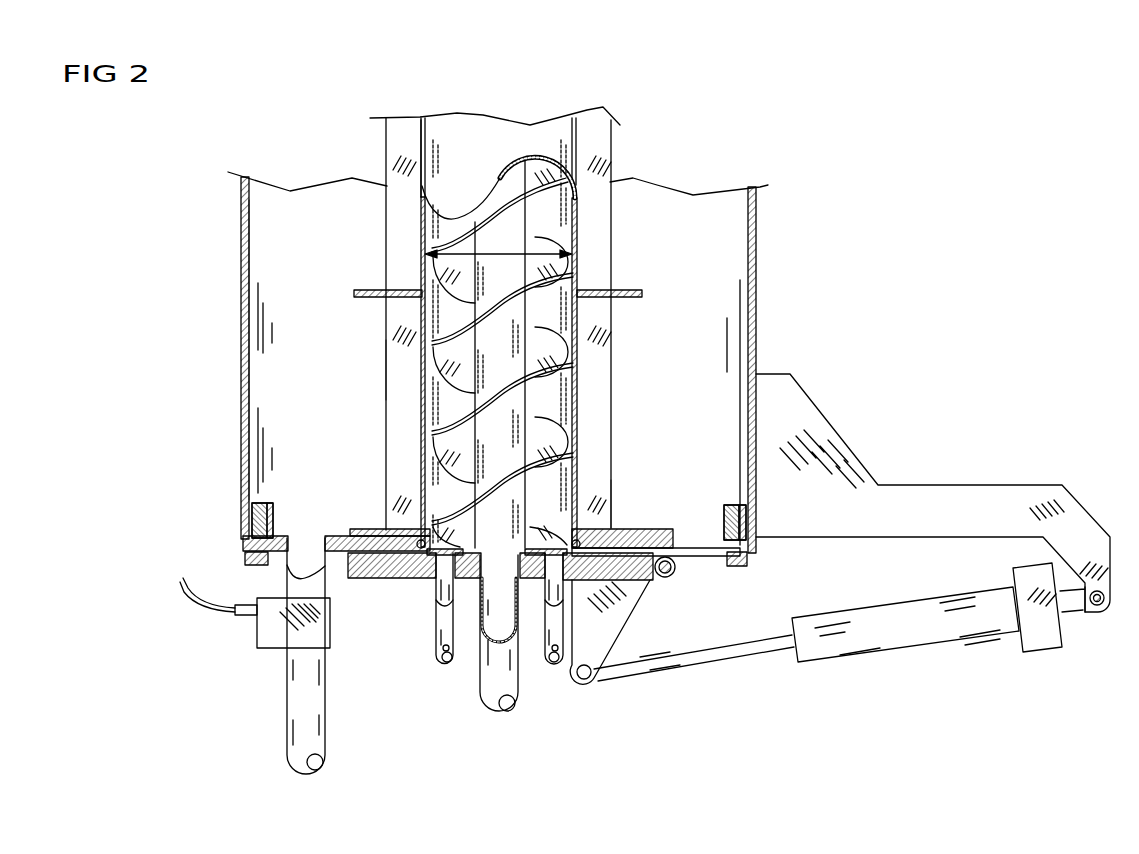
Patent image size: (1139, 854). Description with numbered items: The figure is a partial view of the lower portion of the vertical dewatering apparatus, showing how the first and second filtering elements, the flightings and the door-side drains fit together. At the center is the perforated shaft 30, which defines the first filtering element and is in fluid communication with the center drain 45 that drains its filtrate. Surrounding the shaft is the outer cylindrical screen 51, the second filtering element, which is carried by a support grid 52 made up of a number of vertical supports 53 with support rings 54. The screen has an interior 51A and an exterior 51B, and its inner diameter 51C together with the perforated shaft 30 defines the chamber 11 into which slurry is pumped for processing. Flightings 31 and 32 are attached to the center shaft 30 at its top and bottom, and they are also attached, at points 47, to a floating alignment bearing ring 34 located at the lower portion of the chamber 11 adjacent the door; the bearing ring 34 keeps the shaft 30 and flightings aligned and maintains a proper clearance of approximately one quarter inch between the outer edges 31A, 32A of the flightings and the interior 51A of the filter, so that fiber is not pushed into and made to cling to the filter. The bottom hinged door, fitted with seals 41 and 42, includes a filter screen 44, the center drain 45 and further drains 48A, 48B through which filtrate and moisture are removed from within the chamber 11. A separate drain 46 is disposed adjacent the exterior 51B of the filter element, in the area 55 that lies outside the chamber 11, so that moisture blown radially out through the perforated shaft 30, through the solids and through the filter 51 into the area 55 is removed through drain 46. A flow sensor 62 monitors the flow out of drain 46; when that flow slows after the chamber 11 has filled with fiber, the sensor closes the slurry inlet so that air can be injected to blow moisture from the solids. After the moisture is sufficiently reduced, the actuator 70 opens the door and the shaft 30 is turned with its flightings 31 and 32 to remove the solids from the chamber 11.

The chamber 11 is at (573, 216).
The perforated shaft 30 is at (511, 180).
The flighting 31 is at (560, 363).
The outer edge of flighting 31A is at (433, 423).
The flighting 32 is at (757, 396).
The outer edge of flighting 32A is at (433, 513).
The floating alignment bearing ring 34 is at (423, 553).
The seal 41 is at (358, 554).
The seal 42 is at (474, 556).
The filter screen 44 is at (445, 663).
The center drain 45 is at (497, 710).
The drain 46 is at (297, 694).
The attachment points 47 is at (433, 553).
The drain 48A is at (440, 660).
The drain 48B is at (557, 667).
The outer cylindrical screen 51 is at (543, 142).
The interior of cylindrical screen 51A is at (437, 220).
The exterior of cylindrical screen 51B is at (443, 162).
The inner diameter 51C is at (498, 252).
The support grid 52 is at (587, 163).
The vertical supports 53 is at (397, 333).
The support rings 54 is at (355, 288).
The area outside the chamber 55 is at (325, 345).
The flow sensor 62 is at (280, 627).
The actuator 70 is at (839, 638).